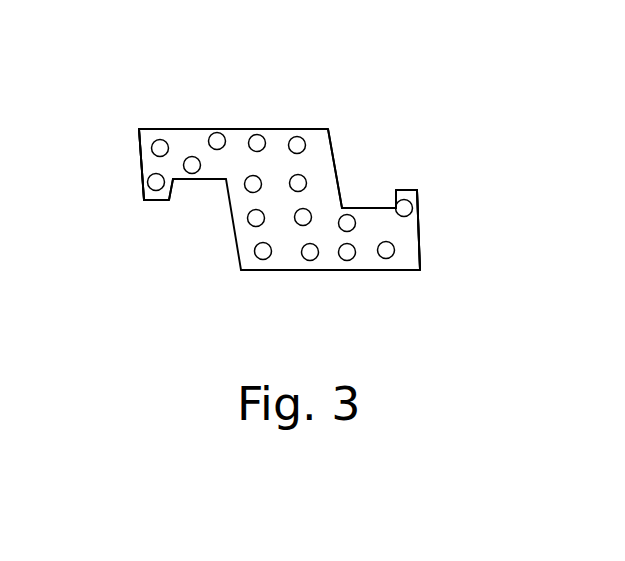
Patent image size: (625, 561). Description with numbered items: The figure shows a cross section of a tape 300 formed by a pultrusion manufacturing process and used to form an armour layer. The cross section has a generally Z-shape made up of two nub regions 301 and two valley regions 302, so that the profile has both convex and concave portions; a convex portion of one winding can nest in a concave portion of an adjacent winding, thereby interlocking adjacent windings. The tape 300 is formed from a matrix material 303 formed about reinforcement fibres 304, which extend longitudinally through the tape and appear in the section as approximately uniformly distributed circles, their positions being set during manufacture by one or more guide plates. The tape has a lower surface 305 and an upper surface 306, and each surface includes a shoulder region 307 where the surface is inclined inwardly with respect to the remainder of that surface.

The tape 300 is at (437, 52).
The nub region 301 is at (140, 205).
The valley region 302 is at (193, 205).
The matrix material 303 is at (277, 262).
The reinforcement fibres 304 is at (216, 131).
The lower surface 305 is at (326, 273).
The upper surface 306 is at (237, 125).
The shoulder region 307 is at (172, 128).